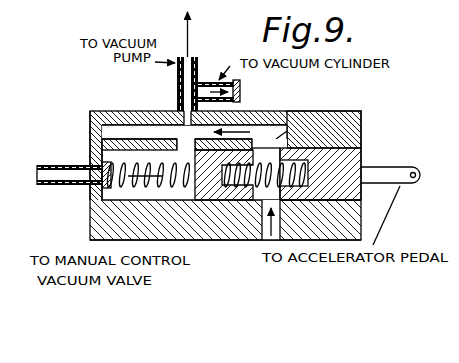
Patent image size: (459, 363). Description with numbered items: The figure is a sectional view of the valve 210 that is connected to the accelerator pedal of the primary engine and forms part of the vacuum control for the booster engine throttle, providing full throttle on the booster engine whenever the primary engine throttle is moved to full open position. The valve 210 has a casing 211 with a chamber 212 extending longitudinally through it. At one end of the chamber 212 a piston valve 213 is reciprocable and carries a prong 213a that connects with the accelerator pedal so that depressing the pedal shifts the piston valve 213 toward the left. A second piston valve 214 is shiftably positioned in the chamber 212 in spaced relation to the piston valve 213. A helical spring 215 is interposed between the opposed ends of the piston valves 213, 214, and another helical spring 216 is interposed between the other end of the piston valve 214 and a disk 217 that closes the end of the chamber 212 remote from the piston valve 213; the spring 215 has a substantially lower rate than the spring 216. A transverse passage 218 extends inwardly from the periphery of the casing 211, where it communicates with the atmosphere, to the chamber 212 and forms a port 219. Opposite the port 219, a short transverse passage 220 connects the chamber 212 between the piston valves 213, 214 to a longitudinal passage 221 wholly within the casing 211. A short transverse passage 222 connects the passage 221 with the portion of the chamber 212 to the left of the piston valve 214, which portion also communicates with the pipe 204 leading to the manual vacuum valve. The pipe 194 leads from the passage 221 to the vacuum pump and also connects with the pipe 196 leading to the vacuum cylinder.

The pipe 194 is at (189, 57).
The pipe 196 is at (241, 86).
The pipe 204 is at (71, 190).
The valve 210 is at (213, 243).
The casing 211 is at (362, 112).
The chamber 212 is at (103, 145).
The piston valve 213 is at (345, 181).
The prong 213a is at (383, 170).
The second piston valve 214 is at (223, 201).
The helical spring 215 is at (285, 150).
The helical spring 216 is at (123, 163).
The disk 217 is at (92, 152).
The transverse passage 218 is at (256, 242).
The port 219 is at (282, 201).
The transverse passage 220 is at (262, 127).
The longitudinal passage 221 is at (254, 138).
The transverse passage 222 is at (158, 132).